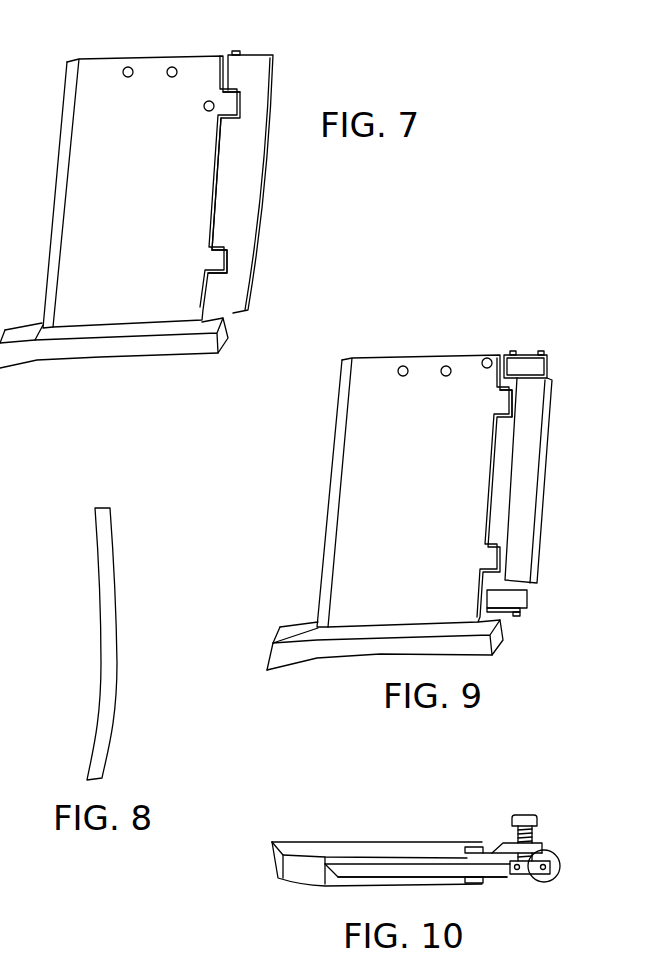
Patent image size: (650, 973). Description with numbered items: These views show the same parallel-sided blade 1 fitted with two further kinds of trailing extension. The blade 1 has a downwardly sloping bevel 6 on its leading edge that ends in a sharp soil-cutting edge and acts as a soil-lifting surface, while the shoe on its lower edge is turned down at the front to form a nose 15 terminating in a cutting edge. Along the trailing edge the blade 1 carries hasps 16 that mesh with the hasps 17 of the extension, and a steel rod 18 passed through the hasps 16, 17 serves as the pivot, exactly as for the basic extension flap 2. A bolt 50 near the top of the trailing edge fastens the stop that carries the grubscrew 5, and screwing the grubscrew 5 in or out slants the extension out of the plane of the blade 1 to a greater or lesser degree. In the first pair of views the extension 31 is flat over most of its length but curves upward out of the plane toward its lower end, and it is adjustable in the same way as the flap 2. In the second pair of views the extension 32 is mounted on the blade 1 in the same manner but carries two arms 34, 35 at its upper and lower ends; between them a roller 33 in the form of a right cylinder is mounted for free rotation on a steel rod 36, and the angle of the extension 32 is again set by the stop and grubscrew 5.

In FIG. 7, the blade 1 is at (150, 93).
In FIG. 9, the blade 1 is at (365, 454).
In FIG. 10, the blade 1 is at (365, 863).
In FIG. 7, the extension flap 2 is at (137, 347).
In FIG. 9, the extension flap 2 is at (348, 653).
In FIG. 10, the extension flap 2 is at (415, 842).
In FIG. 10, the grubscrew 5 is at (538, 822).
In FIG. 7, the bevel 6 is at (57, 160).
In FIG. 9, the bevel 6 is at (340, 400).
In FIG. 10, the bevel 6 is at (334, 880).
In FIG. 7, the nose 15 is at (23, 350).
In FIG. 10, the nose 15 is at (293, 848).
In FIG. 7, the hasps 16 is at (207, 262).
In FIG. 7, the hasps 17 is at (213, 195).
In FIG. 7, the steel rod 18 is at (231, 90).
In FIG. 9, the steel rod 18 is at (511, 351).
In FIG. 10, the steel rod 18 is at (516, 872).
In FIG. 7, the extension 31 is at (259, 195).
In FIG. 8, the extension 31 is at (117, 672).
In FIG. 9, the extension 32 is at (500, 385).
In FIG. 9, the roller 33 is at (543, 505).
In FIG. 10, the roller 33 is at (555, 852).
In FIG. 9, the arm 34 is at (548, 368).
In FIG. 10, the arm 34 is at (546, 876).
In FIG. 9, the arm 35 is at (527, 603).
In FIG. 9, the steel rod 36 is at (542, 351).
In FIG. 7, the bolt 50 is at (207, 112).
In FIG. 9, the bolt 50 is at (488, 357).
In FIG. 10, the bolt 50 is at (470, 842).